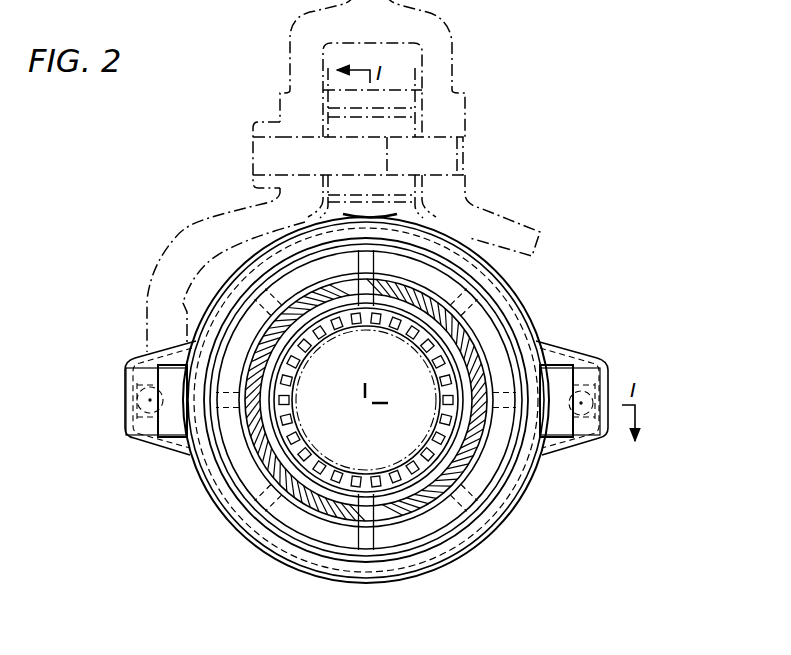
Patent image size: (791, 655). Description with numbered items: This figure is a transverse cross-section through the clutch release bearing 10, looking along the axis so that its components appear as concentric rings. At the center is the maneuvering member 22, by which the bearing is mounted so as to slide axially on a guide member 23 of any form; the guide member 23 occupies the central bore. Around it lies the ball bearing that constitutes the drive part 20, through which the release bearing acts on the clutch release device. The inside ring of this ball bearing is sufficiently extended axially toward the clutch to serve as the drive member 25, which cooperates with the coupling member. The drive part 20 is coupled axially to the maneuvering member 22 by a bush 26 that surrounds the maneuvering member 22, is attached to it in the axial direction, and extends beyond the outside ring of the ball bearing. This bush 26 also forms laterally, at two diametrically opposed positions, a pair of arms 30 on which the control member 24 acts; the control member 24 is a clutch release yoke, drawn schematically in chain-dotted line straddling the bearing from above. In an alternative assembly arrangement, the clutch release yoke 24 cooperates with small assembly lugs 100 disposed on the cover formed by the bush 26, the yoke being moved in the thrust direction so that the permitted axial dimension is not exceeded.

The clutch release bearing 10 is at (518, 503).
The drive part 20 is at (473, 345).
The maneuvering member 22 is at (316, 472).
The guide member 23 is at (338, 478).
The control member 24 is at (198, 223).
The drive member 25 is at (347, 293).
The bush 26 is at (458, 268).
The arms 30 is at (164, 352).
The assembly lugs 100 is at (157, 444).